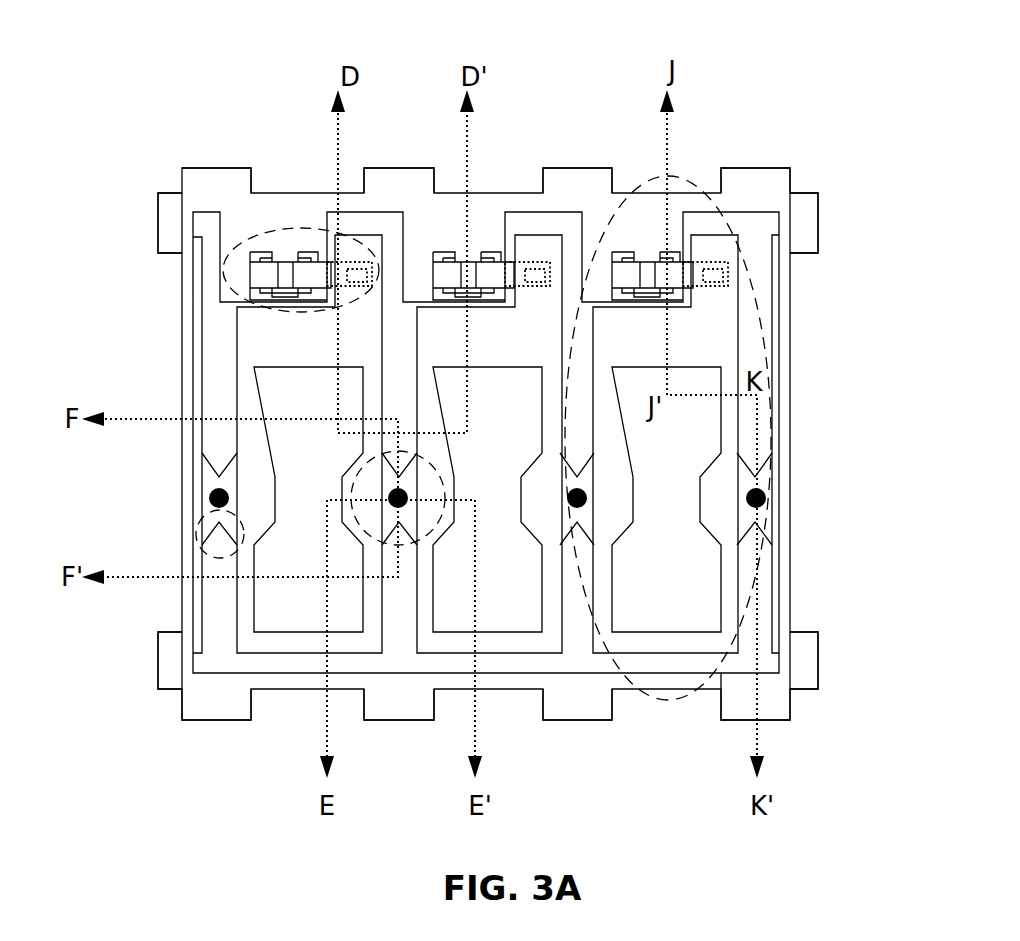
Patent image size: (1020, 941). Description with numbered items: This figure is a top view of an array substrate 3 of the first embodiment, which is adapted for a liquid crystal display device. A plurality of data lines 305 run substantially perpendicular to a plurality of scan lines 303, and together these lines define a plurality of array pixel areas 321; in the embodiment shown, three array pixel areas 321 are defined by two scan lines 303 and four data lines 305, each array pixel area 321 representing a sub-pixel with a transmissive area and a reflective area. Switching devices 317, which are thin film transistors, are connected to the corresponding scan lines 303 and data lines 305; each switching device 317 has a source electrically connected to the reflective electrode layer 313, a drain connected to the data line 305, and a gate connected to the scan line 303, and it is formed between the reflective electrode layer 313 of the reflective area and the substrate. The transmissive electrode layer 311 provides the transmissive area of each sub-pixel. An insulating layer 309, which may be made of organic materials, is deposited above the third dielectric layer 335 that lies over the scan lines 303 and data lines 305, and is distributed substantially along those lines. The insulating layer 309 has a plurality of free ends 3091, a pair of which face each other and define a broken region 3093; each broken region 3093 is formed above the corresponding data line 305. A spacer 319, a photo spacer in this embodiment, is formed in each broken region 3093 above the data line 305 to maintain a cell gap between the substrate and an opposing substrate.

The array substrate 3 is at (558, 50).
The scan lines 303 is at (803, 231).
The data lines 305 is at (757, 187).
The insulating layer 309 is at (302, 660).
The free ends 3091 is at (207, 512).
The broken region 3093 is at (432, 537).
The transmissive electrode layer 311 is at (278, 398).
The reflective electrode layer 313 is at (278, 342).
The switching devices 317 is at (310, 227).
The spacers 319 is at (762, 503).
The array pixel areas 321 is at (643, 695).
The third dielectric layer 335 is at (766, 480).